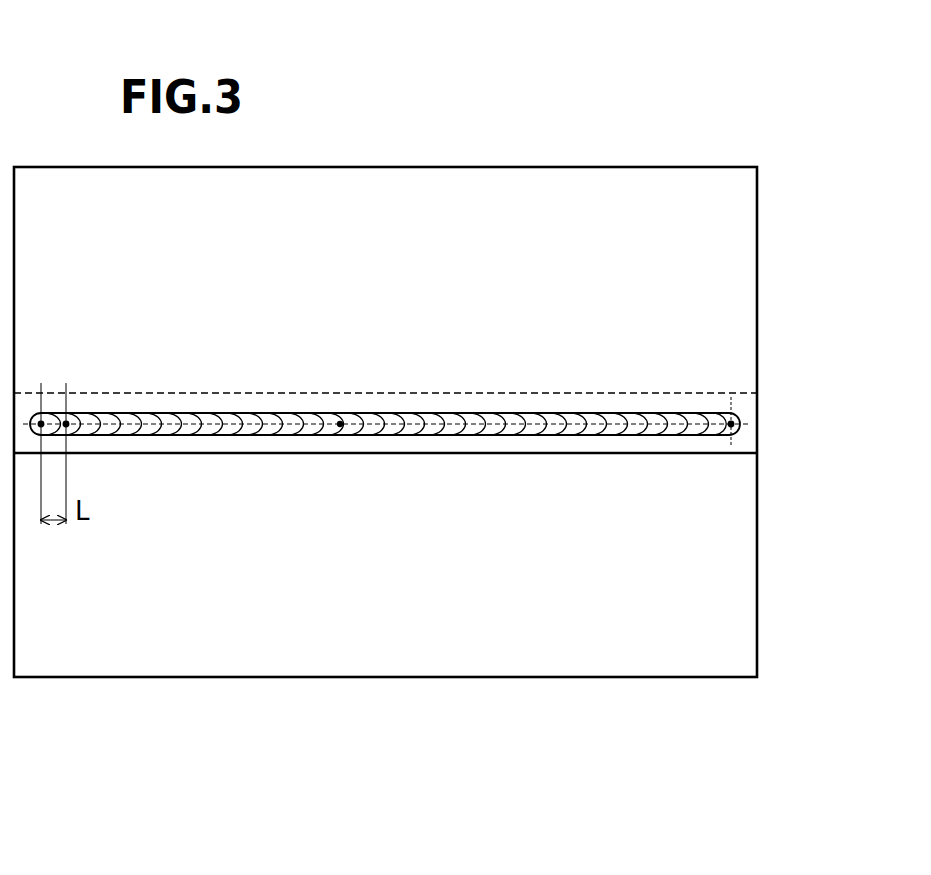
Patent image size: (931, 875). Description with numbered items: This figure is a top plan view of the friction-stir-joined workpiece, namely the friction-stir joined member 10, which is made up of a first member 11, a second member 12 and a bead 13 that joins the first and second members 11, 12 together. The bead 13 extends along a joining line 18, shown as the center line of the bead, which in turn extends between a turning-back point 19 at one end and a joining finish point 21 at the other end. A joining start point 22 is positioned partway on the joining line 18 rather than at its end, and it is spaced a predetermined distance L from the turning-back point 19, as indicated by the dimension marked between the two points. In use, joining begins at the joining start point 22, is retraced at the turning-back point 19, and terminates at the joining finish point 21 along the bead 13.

The friction-stir joined member 10 is at (699, 111).
The first member 11 is at (545, 643).
The second member 12 is at (536, 210).
The bead 13 is at (420, 411).
The joining line 18 is at (340, 426).
The turning-back point 19 is at (52, 412).
The joining finish point 21 is at (729, 420).
The joining start point 22 is at (78, 420).